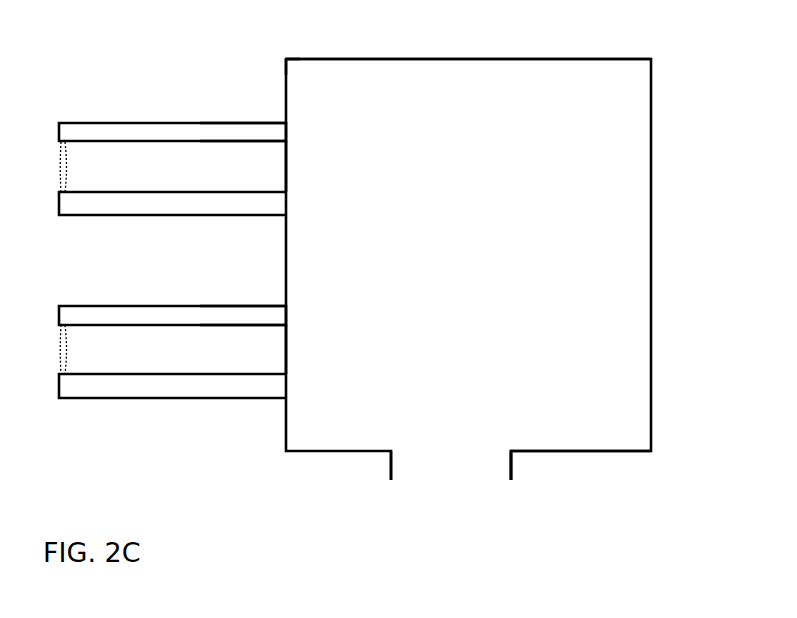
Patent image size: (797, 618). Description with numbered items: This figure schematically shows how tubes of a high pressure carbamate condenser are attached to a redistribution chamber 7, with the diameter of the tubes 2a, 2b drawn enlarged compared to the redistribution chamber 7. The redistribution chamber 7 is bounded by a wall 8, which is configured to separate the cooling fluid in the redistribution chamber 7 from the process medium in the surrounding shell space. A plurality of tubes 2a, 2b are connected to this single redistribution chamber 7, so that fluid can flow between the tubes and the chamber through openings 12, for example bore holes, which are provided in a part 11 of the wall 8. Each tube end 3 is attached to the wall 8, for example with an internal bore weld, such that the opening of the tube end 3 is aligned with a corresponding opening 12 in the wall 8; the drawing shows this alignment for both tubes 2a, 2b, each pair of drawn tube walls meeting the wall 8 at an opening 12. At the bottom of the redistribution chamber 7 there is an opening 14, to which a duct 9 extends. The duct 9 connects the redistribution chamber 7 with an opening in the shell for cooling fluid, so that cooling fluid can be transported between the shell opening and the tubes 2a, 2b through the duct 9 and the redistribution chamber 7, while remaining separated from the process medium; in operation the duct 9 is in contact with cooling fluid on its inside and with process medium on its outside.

The tube 2a is at (87, 122).
The tube 2b is at (87, 315).
The tube end 3 is at (268, 122).
The redistribution chamber 7 is at (433, 87).
The wall 8 is at (341, 57).
The duct 9 is at (511, 461).
The part of the wall 11 is at (285, 93).
The opening 12 is at (298, 158).
The opening of the redistribution chamber 14 is at (436, 452).